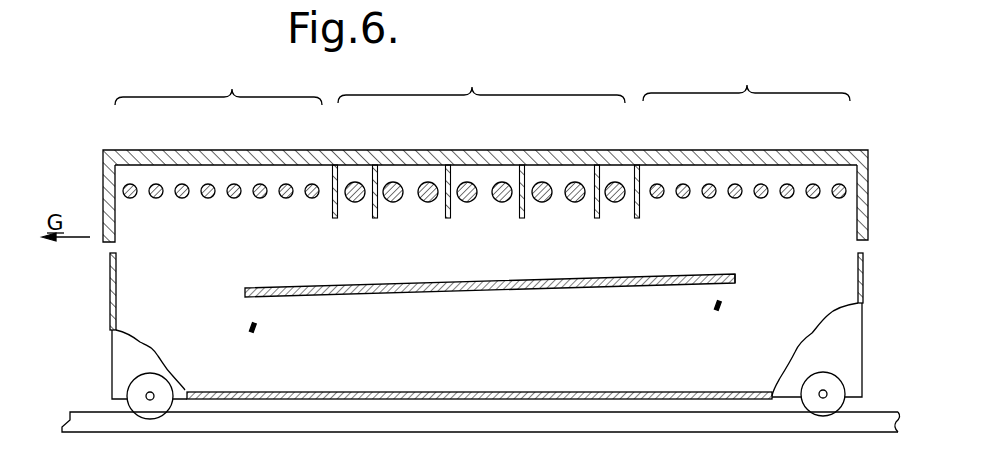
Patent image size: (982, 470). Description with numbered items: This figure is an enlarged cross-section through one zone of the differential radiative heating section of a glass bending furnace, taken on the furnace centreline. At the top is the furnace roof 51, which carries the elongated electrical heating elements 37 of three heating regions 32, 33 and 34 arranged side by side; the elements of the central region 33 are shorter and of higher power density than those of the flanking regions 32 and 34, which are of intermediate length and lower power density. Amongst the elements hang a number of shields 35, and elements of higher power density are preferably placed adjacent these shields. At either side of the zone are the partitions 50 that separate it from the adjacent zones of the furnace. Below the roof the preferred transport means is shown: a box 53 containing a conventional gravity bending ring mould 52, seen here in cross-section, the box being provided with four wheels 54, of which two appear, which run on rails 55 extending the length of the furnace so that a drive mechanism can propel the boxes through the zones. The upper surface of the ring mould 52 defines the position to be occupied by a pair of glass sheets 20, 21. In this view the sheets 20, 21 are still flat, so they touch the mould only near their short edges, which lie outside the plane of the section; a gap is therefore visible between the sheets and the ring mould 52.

The glass sheet 20 is at (736, 276).
The glass sheet 21 is at (737, 284).
The heating region 32 is at (218, 80).
The central heating region 33 is at (481, 127).
The heating region 34 is at (746, 76).
The shield 35 is at (335, 220).
The heating element 37 is at (815, 200).
The partition 50 is at (103, 176).
The furnace roof 51 is at (541, 150).
The ring mould 52 is at (257, 333).
The box 53 is at (832, 348).
The wheel 54 is at (158, 393).
The rail 55 is at (507, 422).